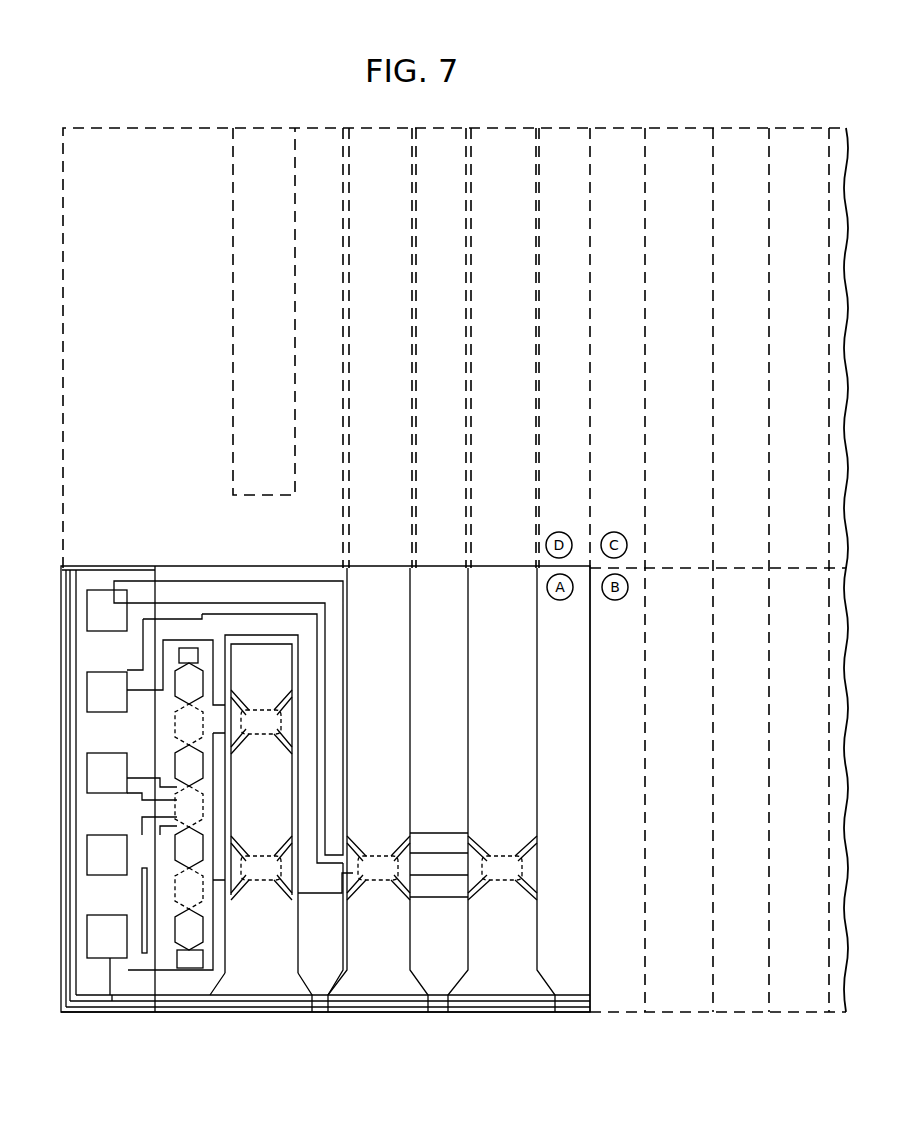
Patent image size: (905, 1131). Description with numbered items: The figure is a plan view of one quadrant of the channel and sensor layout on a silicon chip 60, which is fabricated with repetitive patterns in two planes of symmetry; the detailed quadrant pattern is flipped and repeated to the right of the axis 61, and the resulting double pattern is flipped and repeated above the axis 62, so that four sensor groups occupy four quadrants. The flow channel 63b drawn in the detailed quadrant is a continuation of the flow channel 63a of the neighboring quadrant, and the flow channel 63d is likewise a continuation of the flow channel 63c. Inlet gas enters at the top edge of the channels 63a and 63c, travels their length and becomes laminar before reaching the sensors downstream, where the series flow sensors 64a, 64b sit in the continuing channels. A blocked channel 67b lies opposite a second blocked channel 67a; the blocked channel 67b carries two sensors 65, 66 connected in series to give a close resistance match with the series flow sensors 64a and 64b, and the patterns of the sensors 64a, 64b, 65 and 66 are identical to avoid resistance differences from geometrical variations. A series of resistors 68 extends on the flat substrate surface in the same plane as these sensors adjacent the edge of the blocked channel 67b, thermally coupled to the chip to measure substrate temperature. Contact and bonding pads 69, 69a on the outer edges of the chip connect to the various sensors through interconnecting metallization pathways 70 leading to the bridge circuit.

The silicon chip 60 is at (192, 1022).
The axis 61 is at (590, 1012).
The axis 62 is at (117, 588).
The flow channel 63a is at (400, 332).
The flow channel 63b is at (393, 938).
The flow channel 63c is at (516, 332).
The flow channel 63d is at (517, 938).
The flow sensor 64a is at (380, 848).
The flow sensor 64b is at (502, 848).
The sensor 65 is at (262, 848).
The sensor 66 is at (262, 744).
The blocked channel 67a is at (276, 332).
The blocked channel 67b is at (275, 1005).
The series of resistors 68 is at (200, 933).
The contact and bonding pad 69 is at (102, 932).
The contact and bonding pad 69a is at (108, 846).
The interconnecting metallization pathways 70 is at (200, 590).